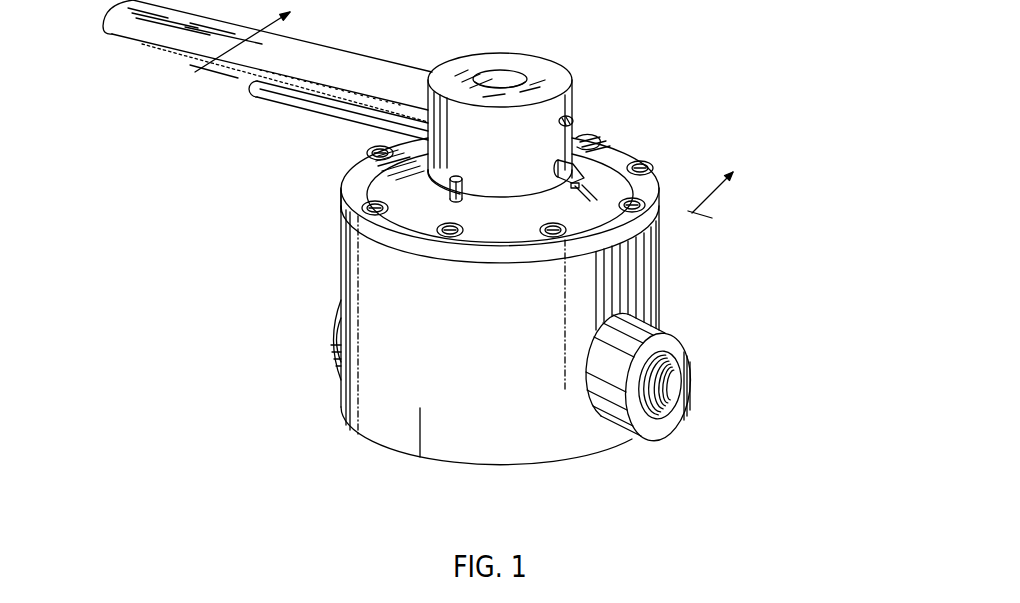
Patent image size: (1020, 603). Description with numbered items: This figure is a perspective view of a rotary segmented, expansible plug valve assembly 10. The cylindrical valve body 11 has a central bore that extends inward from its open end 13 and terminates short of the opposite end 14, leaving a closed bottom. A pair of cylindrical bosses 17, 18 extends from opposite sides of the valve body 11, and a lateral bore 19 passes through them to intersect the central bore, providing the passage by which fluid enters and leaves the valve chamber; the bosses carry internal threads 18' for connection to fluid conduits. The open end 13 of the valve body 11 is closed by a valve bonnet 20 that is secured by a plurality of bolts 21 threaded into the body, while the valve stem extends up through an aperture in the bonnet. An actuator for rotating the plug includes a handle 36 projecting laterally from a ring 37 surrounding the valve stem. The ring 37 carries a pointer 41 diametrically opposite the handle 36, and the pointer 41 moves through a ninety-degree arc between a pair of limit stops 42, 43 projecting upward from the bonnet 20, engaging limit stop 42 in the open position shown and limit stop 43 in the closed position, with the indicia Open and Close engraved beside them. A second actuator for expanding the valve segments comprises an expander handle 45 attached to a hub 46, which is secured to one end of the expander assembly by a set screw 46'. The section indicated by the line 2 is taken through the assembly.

The section line 2- 2 is at (468, 109).
The rotary plug valve assembly 10 is at (676, 137).
The valve body 11 is at (655, 266).
The open end of valve body 13 is at (370, 212).
The opposite end of valve body 14 is at (545, 446).
The cylindrical boss 17 is at (338, 349).
The cylindrical boss 18 is at (670, 366).
The internal threads 18' is at (716, 368).
The lateral bore 19 is at (655, 393).
The valve bonnet 20 is at (650, 180).
The bolts 21 is at (574, 165).
The handle 36 is at (252, 93).
The ring 37 is at (440, 168).
The pointer 41 is at (606, 157).
The limit stop 42 is at (590, 143).
The limit stop 43 is at (450, 196).
The expander handle 45 is at (135, 14).
The hub 46 is at (505, 99).
The set screw 46' is at (598, 88).